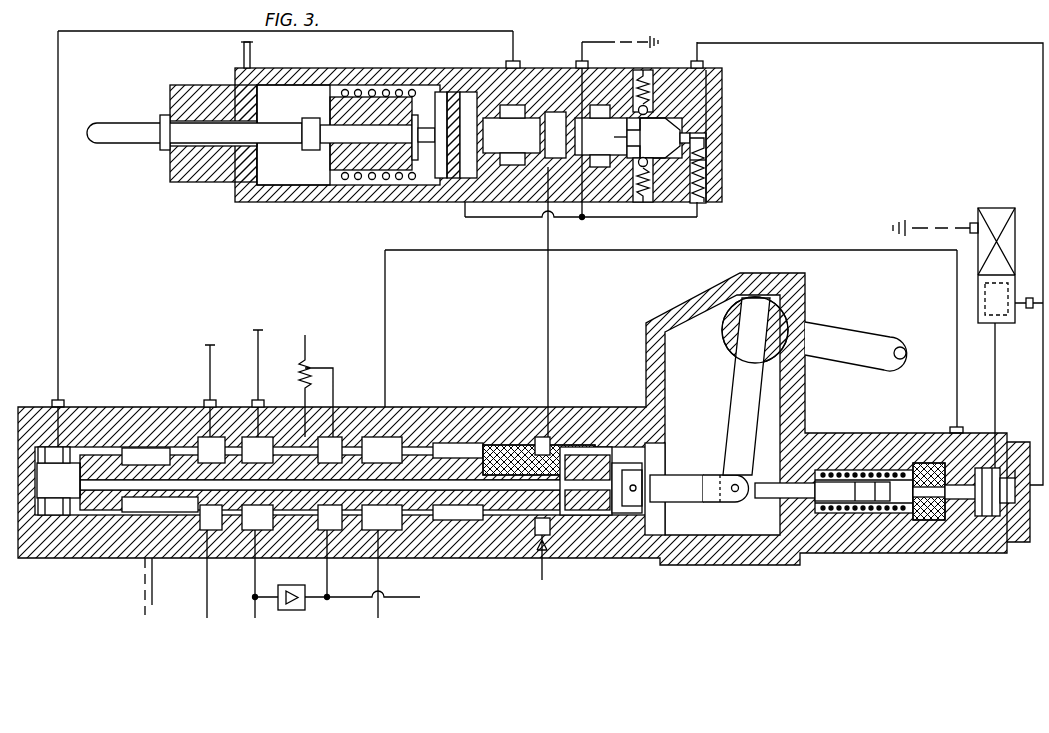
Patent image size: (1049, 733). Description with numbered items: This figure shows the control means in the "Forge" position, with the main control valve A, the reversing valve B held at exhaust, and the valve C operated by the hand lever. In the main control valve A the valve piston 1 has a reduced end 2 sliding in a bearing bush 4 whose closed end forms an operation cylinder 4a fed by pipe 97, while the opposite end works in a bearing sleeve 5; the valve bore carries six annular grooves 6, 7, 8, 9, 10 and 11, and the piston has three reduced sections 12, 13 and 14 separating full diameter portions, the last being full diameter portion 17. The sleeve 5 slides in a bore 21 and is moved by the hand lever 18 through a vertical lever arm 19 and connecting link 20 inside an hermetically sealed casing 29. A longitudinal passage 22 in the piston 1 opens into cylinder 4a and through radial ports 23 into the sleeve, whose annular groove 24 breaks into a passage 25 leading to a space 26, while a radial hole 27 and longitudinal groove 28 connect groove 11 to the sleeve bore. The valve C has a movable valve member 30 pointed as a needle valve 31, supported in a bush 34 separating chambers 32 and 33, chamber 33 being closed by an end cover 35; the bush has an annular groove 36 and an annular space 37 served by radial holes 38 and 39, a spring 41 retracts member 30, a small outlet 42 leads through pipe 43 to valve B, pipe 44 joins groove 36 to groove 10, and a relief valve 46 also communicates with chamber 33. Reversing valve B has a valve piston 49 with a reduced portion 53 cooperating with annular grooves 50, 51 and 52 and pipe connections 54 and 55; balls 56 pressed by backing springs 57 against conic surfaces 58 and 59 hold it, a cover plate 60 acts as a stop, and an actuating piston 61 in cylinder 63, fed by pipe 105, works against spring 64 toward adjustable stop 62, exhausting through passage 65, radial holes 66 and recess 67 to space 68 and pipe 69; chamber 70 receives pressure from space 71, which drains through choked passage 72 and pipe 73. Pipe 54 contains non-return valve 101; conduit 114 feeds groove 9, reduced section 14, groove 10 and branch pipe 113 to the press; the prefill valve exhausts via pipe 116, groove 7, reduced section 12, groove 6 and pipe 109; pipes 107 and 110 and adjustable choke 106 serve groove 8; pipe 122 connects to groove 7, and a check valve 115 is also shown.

The valve piston 1 is at (357, 558).
The reduced end 2 is at (85, 493).
The bearing bush 4 is at (98, 508).
The operation cylinder 4a is at (60, 487).
The bearing sleeve 5 is at (503, 448).
The annular groove 6 is at (128, 508).
The annular groove 7 is at (208, 447).
The annular groove 8 is at (217, 561).
The annular groove 9 is at (333, 458).
The annular groove 10 is at (387, 522).
The annular groove 11 is at (512, 560).
The reduced section 12 is at (171, 609).
The reduced section 13 is at (260, 458).
The reduced section 14 is at (369, 551).
The full diameter portion 17 is at (417, 457).
The hand lever 18 is at (859, 345).
The vertical lever arm 19 is at (747, 404).
The connecting link 20 is at (685, 493).
The bore 21 is at (447, 453).
The longitudinal passage 22 is at (135, 476).
The radial ports 23 is at (578, 447).
The annular groove 24 is at (583, 533).
The passage 25 is at (503, 518).
The space 26 is at (616, 512).
The radial hole 27 is at (608, 443).
The longitudinal groove 28 is at (558, 444).
The hermetically sealed casing 29 is at (680, 336).
The movable valve member 30 is at (788, 500).
The needle valve 31 is at (1009, 440).
The chamber 32 is at (838, 468).
The chamber 33 is at (998, 516).
The bush 34 is at (905, 470).
The end cover 35 is at (1012, 520).
The annular groove 36 is at (952, 522).
The annular space 37 is at (965, 433).
The radial holes 38 is at (946, 460).
The radial holes 39 is at (965, 522).
The spring 41 is at (873, 510).
The small outlet 42 is at (1018, 544).
The pipe 43 is at (930, 45).
The pipe 44 is at (818, 250).
The relief valve 46 is at (994, 208).
The valve piston 49 is at (511, 135).
The annular groove 50 is at (520, 112).
The annular groove 51 is at (545, 162).
The annular groove 52 is at (596, 112).
The reduced portion 53 is at (557, 135).
The pipe connection 54 is at (546, 311).
The pipe connection 55 is at (604, 128).
The balls 56 is at (707, 70).
The backing springs 57 is at (652, 80).
The conic surface 58 is at (607, 136).
The conic surface 59 is at (668, 124).
The cover plate 60 is at (706, 150).
The actuating piston 61 is at (337, 168).
The adjustable stop 62 is at (308, 148).
The cylinder 63 is at (276, 105).
The spring 64 is at (352, 88).
The passage 65 is at (372, 135).
The radial holes 66 is at (414, 112).
The recess 67 is at (441, 92).
The space 68 is at (470, 105).
The pipe 69 is at (465, 210).
The chamber 70 is at (672, 110).
The space 71 is at (690, 136).
The choked passage 72 is at (700, 163).
The pipe 73 is at (646, 217).
The pipe 97 is at (60, 238).
The non-return valve 101 is at (542, 565).
The pipe 105 is at (243, 55).
The adjustable choke 106 is at (305, 345).
The pipe 107 is at (255, 607).
The pipe 109 is at (145, 607).
The pipe 110 is at (258, 336).
The branch pipe 113 is at (400, 600).
The conduit 114 is at (350, 598).
The check valve 115 is at (304, 588).
The pipe 116 is at (208, 352).
The pipe 122 is at (206, 578).
The main control valve A is at (453, 413).
The reversing valve B is at (712, 183).
The valve C is at (842, 440).